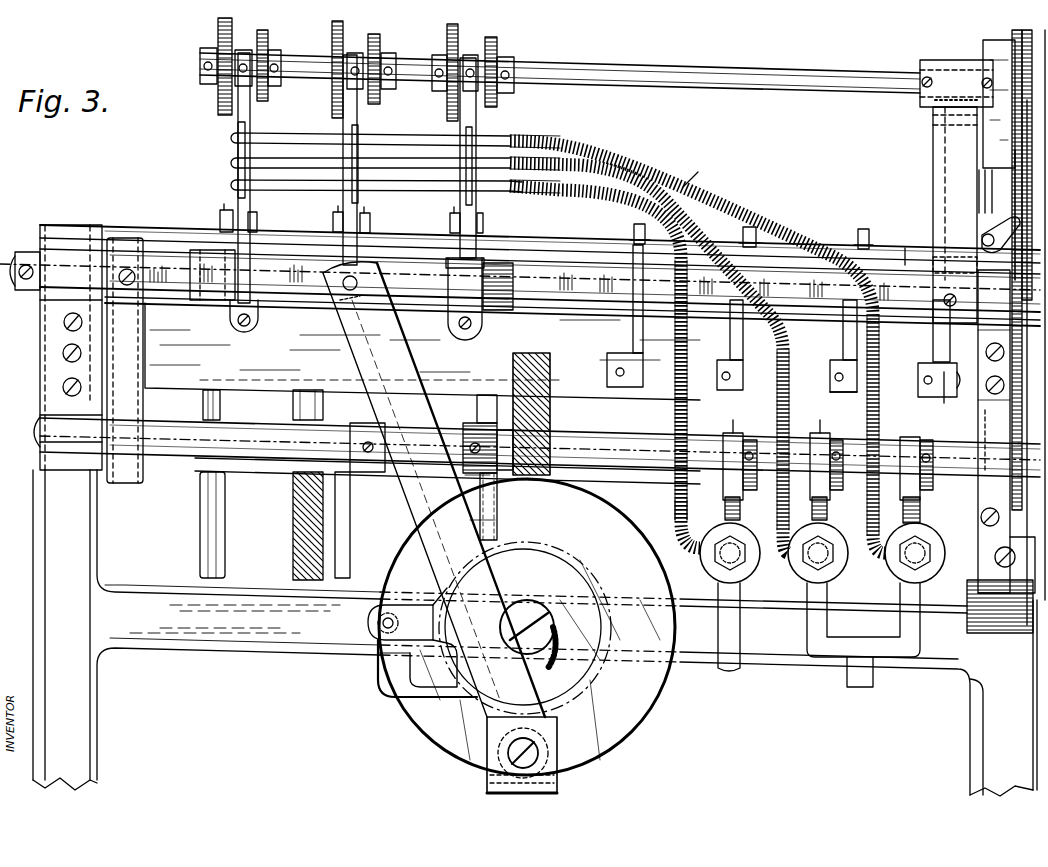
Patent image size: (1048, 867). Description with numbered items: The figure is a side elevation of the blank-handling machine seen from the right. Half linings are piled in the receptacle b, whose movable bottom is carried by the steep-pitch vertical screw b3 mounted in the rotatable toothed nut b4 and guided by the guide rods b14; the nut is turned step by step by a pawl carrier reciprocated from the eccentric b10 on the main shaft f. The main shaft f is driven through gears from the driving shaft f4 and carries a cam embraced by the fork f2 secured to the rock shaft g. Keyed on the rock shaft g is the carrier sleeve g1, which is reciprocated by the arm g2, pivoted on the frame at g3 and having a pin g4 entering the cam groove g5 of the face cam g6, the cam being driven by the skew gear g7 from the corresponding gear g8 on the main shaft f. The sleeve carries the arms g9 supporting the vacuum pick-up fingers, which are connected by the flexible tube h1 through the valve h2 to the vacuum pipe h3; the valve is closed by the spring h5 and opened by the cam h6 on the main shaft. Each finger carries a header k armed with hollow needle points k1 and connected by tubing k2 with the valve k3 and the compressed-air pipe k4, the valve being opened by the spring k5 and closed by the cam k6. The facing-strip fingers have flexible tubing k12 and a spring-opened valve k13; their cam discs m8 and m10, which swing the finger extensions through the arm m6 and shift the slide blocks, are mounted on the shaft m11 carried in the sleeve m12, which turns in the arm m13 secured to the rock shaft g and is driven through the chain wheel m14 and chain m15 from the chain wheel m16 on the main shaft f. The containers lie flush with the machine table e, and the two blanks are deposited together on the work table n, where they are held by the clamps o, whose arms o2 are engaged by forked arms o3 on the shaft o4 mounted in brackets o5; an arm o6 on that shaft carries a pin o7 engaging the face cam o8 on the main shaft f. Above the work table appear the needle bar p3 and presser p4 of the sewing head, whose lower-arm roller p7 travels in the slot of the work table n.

The shaft m11 is at (640, 77).
The cam disc m10 is at (218, 31).
The upwardly extending arm m6 is at (268, 36).
The cam disc m8 is at (497, 43).
The sleeve m12 is at (938, 105).
The arm m13 is at (945, 193).
The chain wheel m14 is at (1000, 40).
The chain m15 is at (1015, 200).
The chain wheel m16 is at (945, 485).
The needle bar p3 is at (985, 180).
The presser p4 is at (1014, 232).
The stud or roller p7 is at (975, 262).
The work table n is at (896, 246).
The arms g9 is at (250, 116).
The casing or header k is at (257, 222).
The hollow needle points k1 is at (257, 228).
The tubing k2 is at (568, 193).
The flexible tubing k12 is at (703, 169).
The flexible tube h1 is at (568, 140).
The valve h2 is at (678, 525).
The machine table e is at (95, 226).
The rock shaft g is at (808, 292).
The carrier sleeve g1 is at (200, 262).
The clamps o is at (634, 236).
The arm o2 is at (645, 310).
The forked arm o3 is at (633, 322).
The shaft o4 is at (802, 385).
The brackets o5 is at (490, 318).
The arm o6 is at (483, 397).
The pin o7 is at (459, 497).
The face cam o8 is at (497, 480).
The receptacle b is at (422, 351).
The vertical screw b3 is at (293, 552).
The rotatable nut b4 is at (275, 470).
The eccentric b10 is at (366, 472).
The guide rods b14 is at (205, 540).
The main shaft f is at (33, 452).
The fork f2 is at (143, 472).
The driving shaft f4 is at (960, 625).
The gear g8 is at (550, 400).
The cam h6 is at (737, 453).
The spring h5 is at (724, 508).
The pipe h3 is at (740, 660).
The cam k6 is at (826, 453).
The spring k5 is at (828, 510).
The valve k3 is at (832, 540).
The pipe k4 is at (860, 690).
The spring opened valve k13 is at (932, 545).
The arm g2 is at (434, 489).
The pivot g3 is at (517, 750).
The pin g4 is at (385, 636).
The cam groove g5 is at (556, 642).
The face cam g6 is at (612, 755).
The skew gear g7 is at (493, 683).